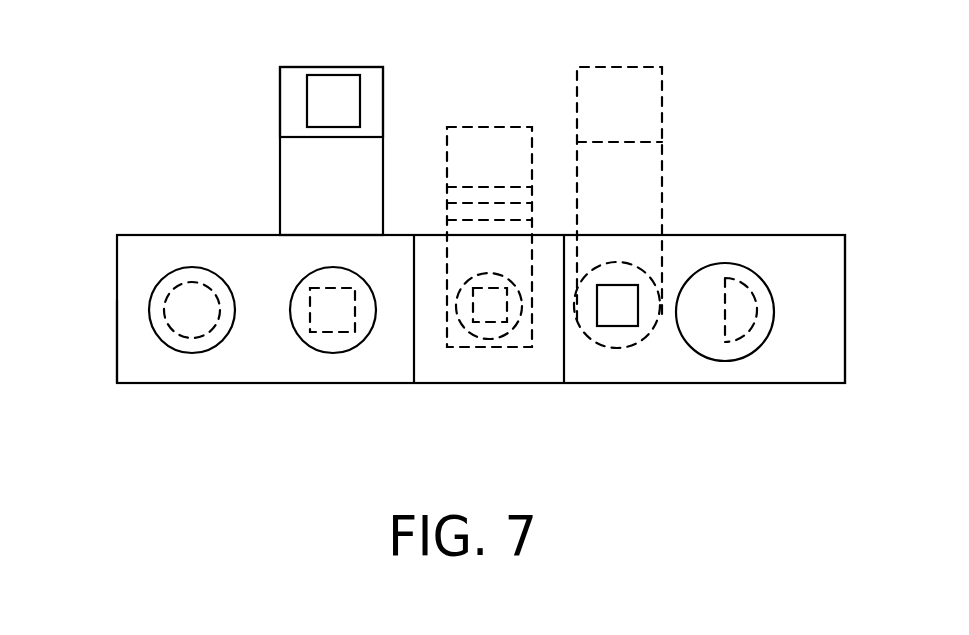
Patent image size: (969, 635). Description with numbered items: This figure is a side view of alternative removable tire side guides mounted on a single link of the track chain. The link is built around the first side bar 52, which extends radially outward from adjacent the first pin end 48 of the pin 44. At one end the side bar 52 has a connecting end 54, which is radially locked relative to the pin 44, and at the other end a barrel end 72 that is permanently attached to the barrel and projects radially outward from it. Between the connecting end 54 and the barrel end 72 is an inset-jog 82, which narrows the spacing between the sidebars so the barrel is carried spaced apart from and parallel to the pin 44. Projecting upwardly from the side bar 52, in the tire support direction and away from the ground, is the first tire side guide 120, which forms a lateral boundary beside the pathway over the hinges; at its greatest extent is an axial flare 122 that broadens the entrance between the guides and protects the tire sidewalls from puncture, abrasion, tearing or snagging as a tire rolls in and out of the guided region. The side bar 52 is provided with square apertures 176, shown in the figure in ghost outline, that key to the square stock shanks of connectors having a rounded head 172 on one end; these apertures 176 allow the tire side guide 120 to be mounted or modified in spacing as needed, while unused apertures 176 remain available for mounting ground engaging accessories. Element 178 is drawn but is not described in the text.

The pin 44 is at (752, 352).
The first pin end 48 is at (166, 351).
The first side bar 52 is at (116, 337).
The connecting end 54 is at (461, 291).
The barrel end 72 is at (731, 291).
The inset-jog 82 is at (478, 283).
The first tire side guide 120 is at (385, 147).
The axial flare 122 is at (381, 97).
The rounded head 172 is at (304, 351).
The apertures 176 is at (575, 362).
The window 178 is at (301, 74).